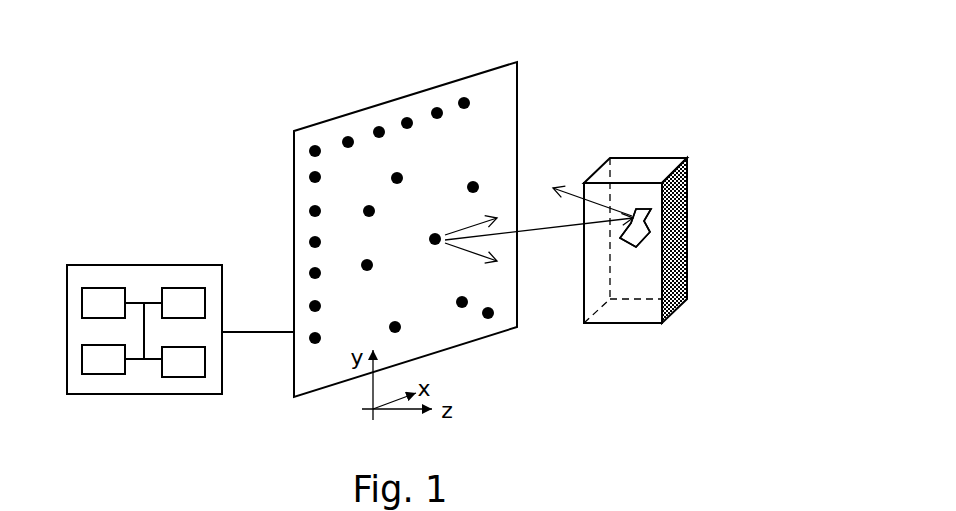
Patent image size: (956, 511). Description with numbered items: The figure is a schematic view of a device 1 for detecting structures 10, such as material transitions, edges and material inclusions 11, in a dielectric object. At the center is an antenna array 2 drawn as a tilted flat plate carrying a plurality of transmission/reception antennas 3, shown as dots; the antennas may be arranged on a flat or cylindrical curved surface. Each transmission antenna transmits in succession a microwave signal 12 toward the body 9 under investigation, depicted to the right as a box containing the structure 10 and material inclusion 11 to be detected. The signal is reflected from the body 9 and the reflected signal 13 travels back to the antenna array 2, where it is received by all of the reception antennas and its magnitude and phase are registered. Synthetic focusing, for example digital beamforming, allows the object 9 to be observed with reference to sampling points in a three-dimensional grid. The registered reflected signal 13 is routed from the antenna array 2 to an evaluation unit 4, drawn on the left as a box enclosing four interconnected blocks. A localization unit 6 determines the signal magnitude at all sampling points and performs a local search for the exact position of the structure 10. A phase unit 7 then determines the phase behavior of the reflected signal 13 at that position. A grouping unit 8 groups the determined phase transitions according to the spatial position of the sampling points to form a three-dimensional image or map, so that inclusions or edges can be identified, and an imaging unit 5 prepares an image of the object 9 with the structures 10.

The device 1 is at (654, 20).
The antenna array 2 is at (386, 102).
The transmission/reception antenna 3 is at (431, 236).
The evaluation unit 4 is at (185, 397).
The imaging unit 5 is at (207, 368).
The localization unit 6 is at (205, 297).
The phase unit 7 is at (79, 295).
The grouping unit 8 is at (80, 365).
The body under investigation 9 is at (665, 167).
The structure 10 is at (650, 233).
The material inclusion 11 is at (635, 228).
The microwave signal 12 is at (533, 232).
The reflected signal 13 is at (572, 192).